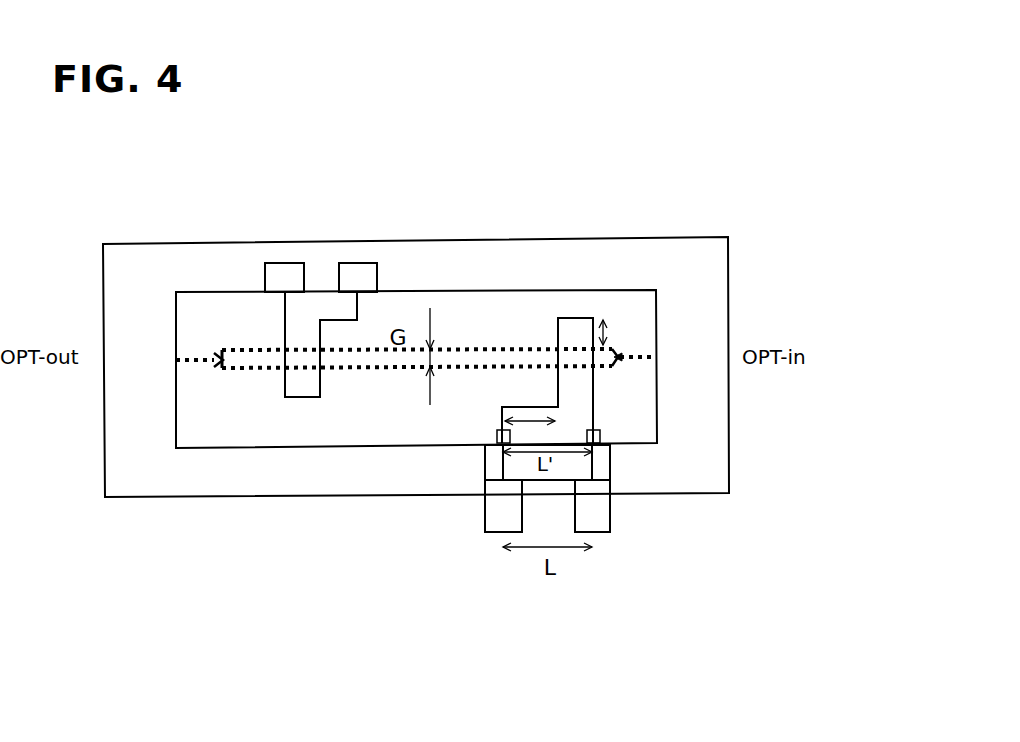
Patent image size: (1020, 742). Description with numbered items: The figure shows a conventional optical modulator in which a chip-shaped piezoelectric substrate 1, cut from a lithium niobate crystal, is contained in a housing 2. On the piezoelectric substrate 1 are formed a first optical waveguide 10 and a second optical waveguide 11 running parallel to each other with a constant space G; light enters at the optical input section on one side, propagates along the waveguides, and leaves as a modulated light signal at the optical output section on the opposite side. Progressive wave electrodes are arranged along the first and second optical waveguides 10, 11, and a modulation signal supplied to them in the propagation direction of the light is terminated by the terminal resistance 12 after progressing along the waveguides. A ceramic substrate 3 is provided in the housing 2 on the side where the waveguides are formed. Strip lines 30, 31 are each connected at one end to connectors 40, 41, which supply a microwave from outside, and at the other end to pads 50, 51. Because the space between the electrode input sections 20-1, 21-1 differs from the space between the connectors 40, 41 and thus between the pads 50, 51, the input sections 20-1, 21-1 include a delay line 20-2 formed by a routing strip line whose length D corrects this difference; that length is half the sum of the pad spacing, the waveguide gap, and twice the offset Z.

The piezoelectric substrate 1 is at (190, 427).
The housing 2 is at (205, 497).
The ceramic substrate 3 is at (490, 467).
The first optical waveguide 10 is at (250, 357).
The second optical waveguide 11 is at (222, 350).
The terminal resistance 12 is at (292, 270).
The input section of first progressive wave electrode 20-1 is at (562, 383).
The delay line 20-2 is at (522, 405).
The input section of second progressive wave electrode 21-1 is at (600, 397).
The strip line 30 is at (593, 467).
The strip line 31 is at (503, 467).
The connector 40 is at (502, 532).
The connector 41 is at (592, 523).
The pad 50 is at (498, 440).
The pad 51 is at (603, 432).